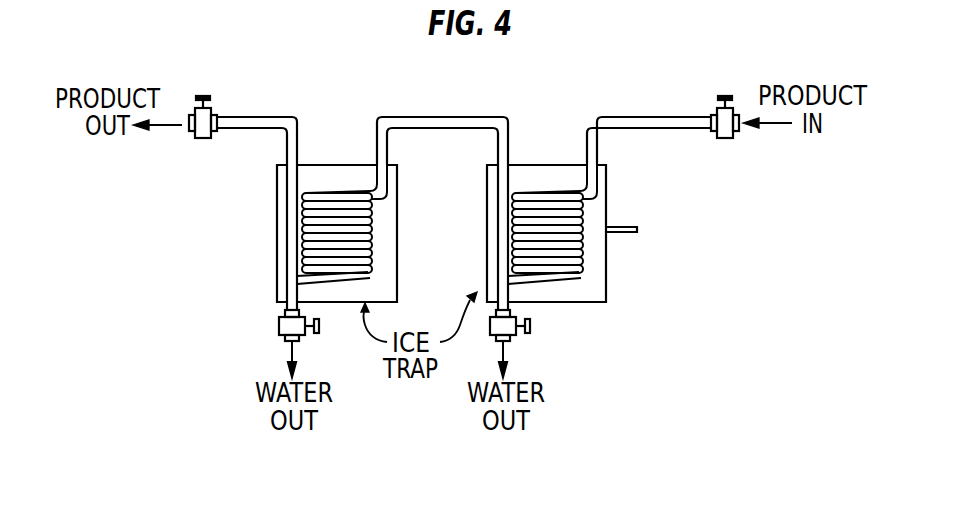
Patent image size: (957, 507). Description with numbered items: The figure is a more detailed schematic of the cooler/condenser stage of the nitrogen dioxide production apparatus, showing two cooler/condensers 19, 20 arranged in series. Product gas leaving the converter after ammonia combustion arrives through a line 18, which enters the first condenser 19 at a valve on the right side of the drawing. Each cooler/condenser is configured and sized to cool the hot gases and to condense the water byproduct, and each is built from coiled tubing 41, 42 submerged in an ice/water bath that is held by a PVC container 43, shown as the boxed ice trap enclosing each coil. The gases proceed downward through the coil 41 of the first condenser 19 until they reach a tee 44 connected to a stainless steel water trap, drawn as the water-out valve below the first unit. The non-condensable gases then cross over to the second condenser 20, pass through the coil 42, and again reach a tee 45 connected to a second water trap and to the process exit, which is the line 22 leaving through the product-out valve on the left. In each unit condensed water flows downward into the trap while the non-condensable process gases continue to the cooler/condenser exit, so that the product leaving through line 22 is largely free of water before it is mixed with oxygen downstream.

The line 18 is at (650, 116).
The line 22 is at (242, 116).
The condenser 19 is at (633, 238).
The condenser 20 is at (270, 233).
The coiled tubing 41 is at (550, 193).
The coiled tubing 42 is at (335, 193).
The PVC container 43 is at (487, 222).
The tee 44 is at (516, 336).
The tee 45 is at (279, 334).